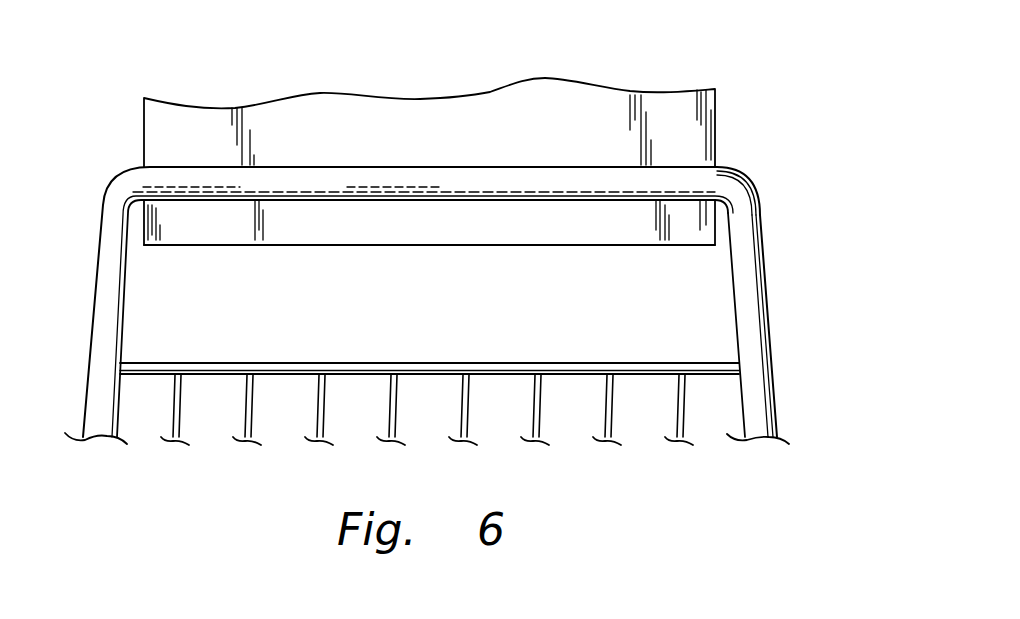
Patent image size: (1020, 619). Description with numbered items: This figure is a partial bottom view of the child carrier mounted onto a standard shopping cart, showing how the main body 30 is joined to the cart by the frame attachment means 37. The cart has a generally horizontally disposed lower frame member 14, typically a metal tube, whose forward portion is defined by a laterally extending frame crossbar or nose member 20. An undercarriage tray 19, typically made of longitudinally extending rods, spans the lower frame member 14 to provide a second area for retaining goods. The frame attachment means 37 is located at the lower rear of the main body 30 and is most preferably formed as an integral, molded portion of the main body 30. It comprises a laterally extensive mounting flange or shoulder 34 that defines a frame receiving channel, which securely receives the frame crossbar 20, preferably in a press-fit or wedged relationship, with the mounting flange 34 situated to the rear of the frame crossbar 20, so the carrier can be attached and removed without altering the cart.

The lower frame member 14 is at (765, 297).
The undercarriage tray 19 is at (640, 376).
The frame crossbar 20 is at (683, 180).
The main body 30 is at (675, 105).
The mounting flange 34 is at (550, 227).
The frame attachment means 37 is at (113, 131).